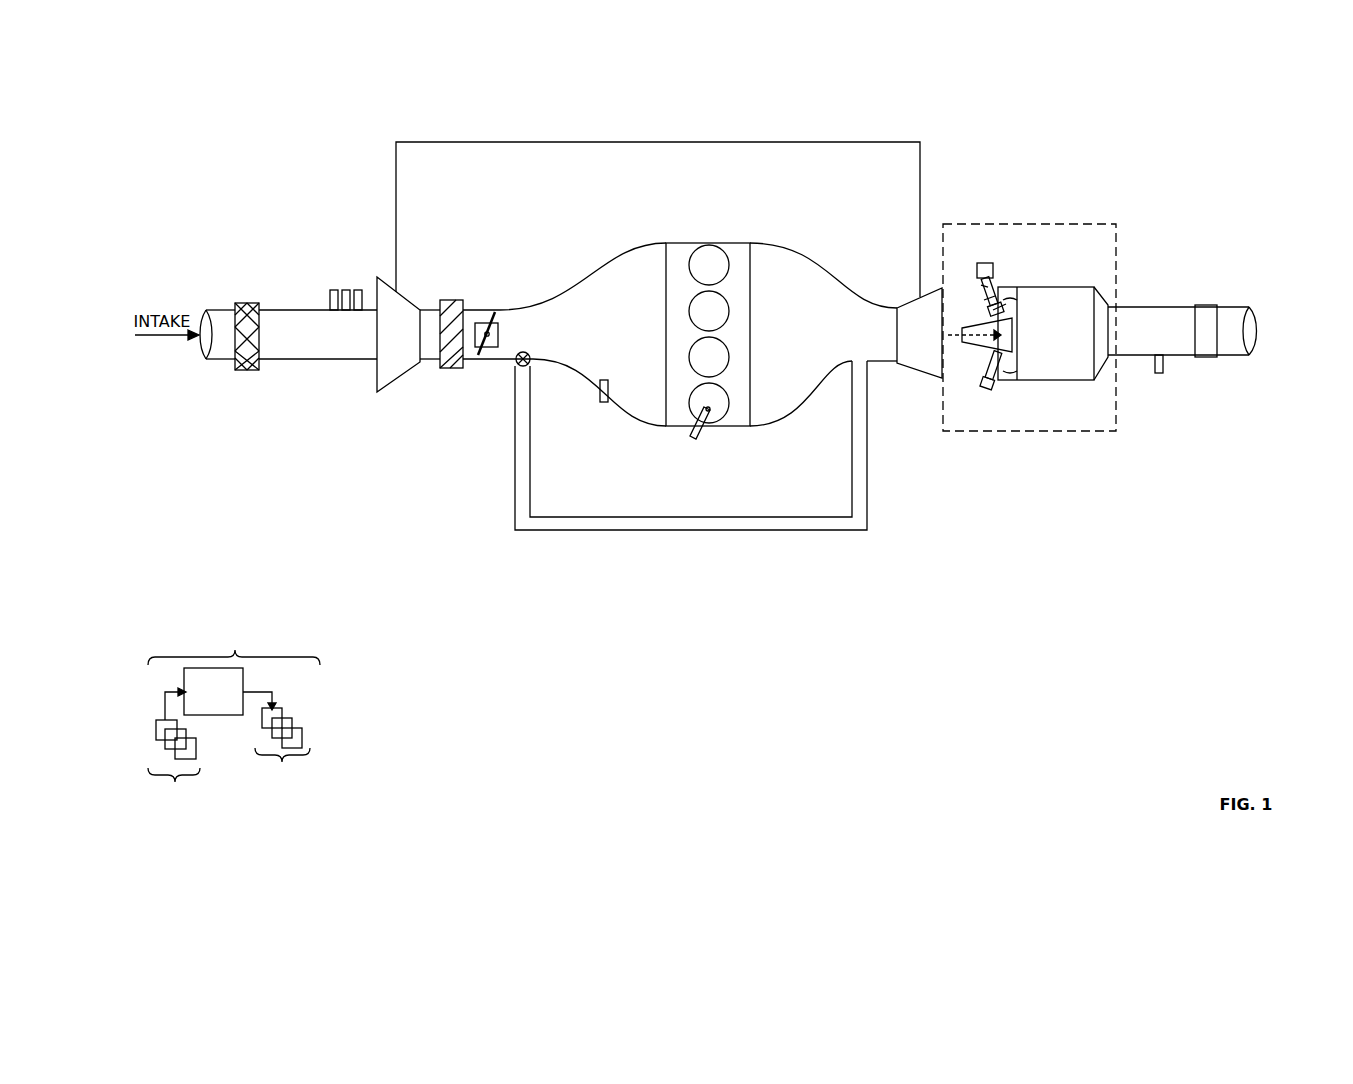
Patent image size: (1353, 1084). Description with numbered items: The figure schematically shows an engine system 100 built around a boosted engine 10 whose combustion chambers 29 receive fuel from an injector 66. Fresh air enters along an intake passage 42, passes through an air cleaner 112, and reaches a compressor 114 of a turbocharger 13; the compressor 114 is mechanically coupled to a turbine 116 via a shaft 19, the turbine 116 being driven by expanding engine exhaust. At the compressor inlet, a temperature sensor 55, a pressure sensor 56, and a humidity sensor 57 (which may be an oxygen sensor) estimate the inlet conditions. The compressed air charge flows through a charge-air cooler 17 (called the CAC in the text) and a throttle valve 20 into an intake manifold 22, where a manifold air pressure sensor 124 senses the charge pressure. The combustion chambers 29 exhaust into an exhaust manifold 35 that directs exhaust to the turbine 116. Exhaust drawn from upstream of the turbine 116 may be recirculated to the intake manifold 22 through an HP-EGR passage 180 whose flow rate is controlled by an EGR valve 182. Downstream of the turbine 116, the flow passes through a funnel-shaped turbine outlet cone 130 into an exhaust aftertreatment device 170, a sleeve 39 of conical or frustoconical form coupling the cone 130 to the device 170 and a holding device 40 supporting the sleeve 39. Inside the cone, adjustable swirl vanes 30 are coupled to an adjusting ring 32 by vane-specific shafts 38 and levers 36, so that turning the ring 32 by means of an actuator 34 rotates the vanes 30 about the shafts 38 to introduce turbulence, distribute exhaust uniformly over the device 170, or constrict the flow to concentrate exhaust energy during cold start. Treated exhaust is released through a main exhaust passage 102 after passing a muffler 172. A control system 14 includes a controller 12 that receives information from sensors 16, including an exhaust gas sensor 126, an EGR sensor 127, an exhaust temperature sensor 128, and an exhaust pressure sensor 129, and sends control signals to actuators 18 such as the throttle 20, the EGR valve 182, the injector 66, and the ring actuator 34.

The engine 10 is at (799, 199).
The controller 12 is at (213, 691).
The turbocharger 13 is at (396, 398).
The control system 14 is at (234, 629).
The sensors 16 is at (180, 752).
The charge air cooler 17 is at (455, 300).
The actuators 18 is at (284, 754).
The shaft 19 is at (697, 144).
The throttle valve 20 is at (498, 345).
The intake manifold 22 is at (583, 334).
The combustion chambers 29 is at (729, 258).
The swirl vanes 30 is at (974, 330).
The adjusting ring 32 is at (992, 290).
The actuator 34 is at (993, 264).
The exhaust manifold 35 is at (823, 334).
The levers 36 is at (979, 281).
The shafts 38 is at (983, 311).
The sleeve 39 is at (1004, 301).
The holding device 40 is at (1005, 300).
The intake passage 42 is at (213, 360).
The temperature sensor 55 is at (334, 290).
The pressure sensor 56 is at (346, 290).
The humidity sensor 57 is at (358, 290).
The injector 66 is at (705, 431).
The engine system 100 is at (1180, 200).
The main exhaust passage 102 is at (1230, 357).
The air cleaner 112 is at (250, 303).
The compressor 114 is at (398, 334).
The turbine 116 is at (919, 333).
The manifold air pressure sensor 124 is at (602, 402).
The exhaust gas sensor 126 is at (156, 724).
The EGR sensor 127 is at (165, 745).
The exhaust temperature sensor 128 is at (1161, 373).
The exhaust pressure sensor 129 is at (196, 755).
The turbine outlet cone 130 is at (986, 206).
The exhaust aftertreatment device 170 is at (1012, 337).
The muffler 172 is at (1210, 305).
The HP-EGR passage 180 is at (515, 517).
The EGR valve 182 is at (516, 362).